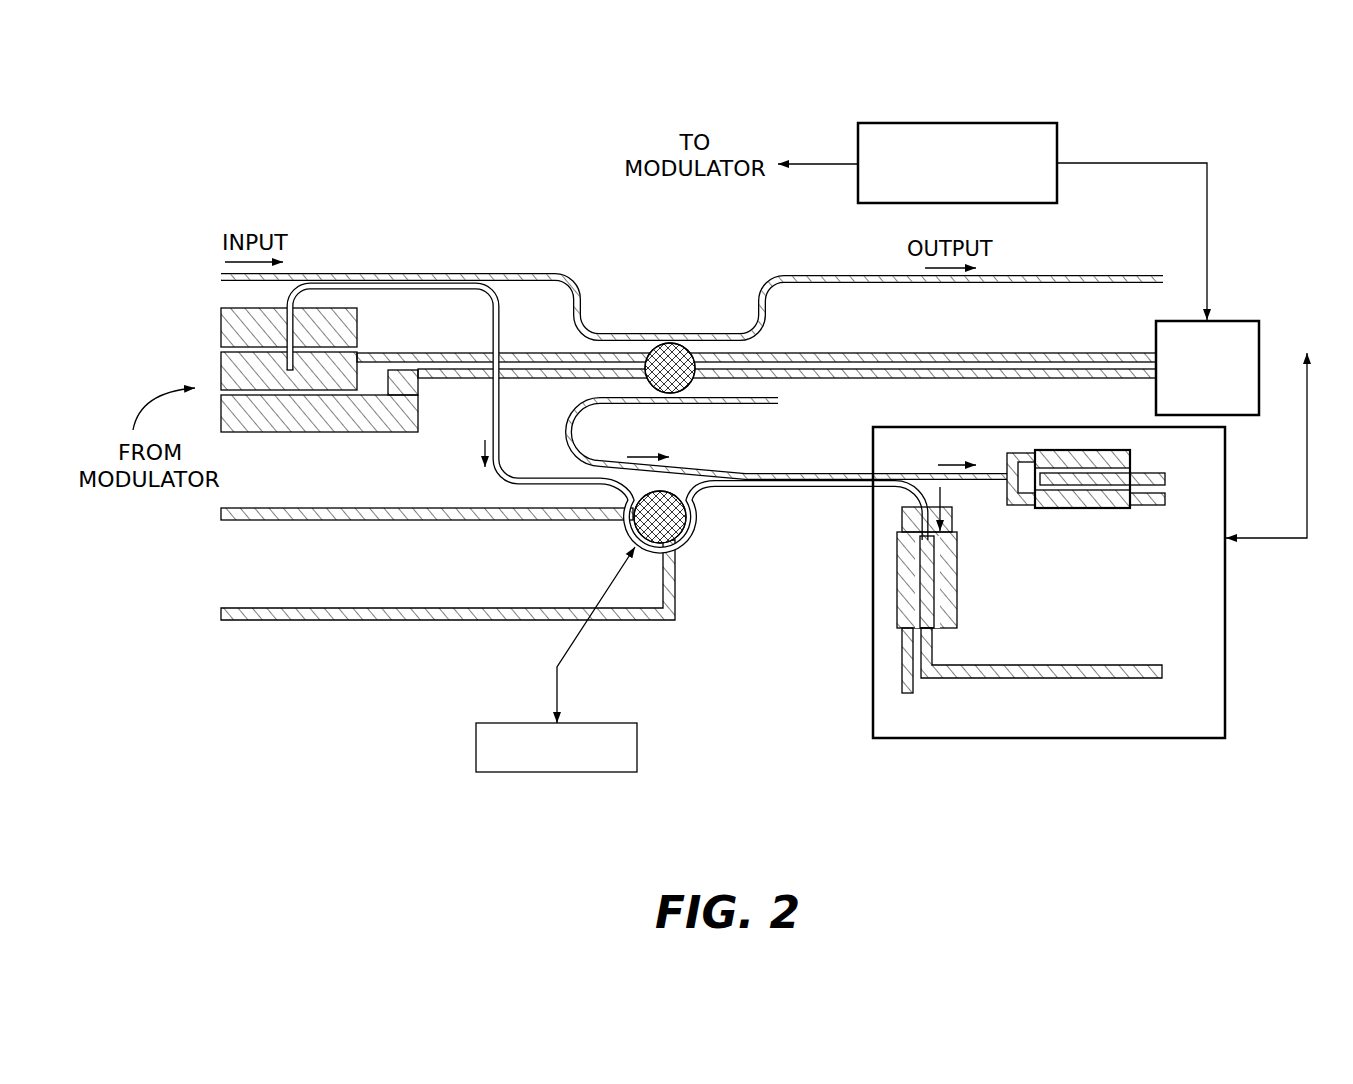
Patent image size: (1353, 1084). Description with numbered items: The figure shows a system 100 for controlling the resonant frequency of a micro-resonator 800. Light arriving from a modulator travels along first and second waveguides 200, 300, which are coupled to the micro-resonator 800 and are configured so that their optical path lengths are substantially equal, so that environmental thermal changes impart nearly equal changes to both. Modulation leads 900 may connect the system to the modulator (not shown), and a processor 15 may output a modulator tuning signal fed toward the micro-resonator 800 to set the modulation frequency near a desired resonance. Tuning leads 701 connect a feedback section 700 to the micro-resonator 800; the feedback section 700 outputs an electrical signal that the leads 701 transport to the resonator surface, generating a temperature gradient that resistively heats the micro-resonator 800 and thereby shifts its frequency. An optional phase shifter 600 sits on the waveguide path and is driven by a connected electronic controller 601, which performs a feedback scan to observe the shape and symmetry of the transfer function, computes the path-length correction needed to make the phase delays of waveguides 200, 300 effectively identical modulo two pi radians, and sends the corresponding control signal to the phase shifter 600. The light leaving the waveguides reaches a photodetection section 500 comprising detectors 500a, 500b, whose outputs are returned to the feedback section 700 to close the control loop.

The processor 15 is at (878, 122).
The system 100 is at (692, 555).
The first waveguide 200 is at (505, 483).
The second waveguide 300 is at (580, 435).
The photodetection section 500 is at (1049, 623).
The detector 500a is at (964, 585).
The detector 500b is at (1086, 519).
The phase shifter 600 is at (680, 543).
The electronic controller 601 is at (505, 723).
The feedback section 700 is at (1226, 318).
The tuning leads 701 is at (803, 354).
The micro-resonator 800 is at (666, 342).
The modulation leads 900 is at (568, 352).